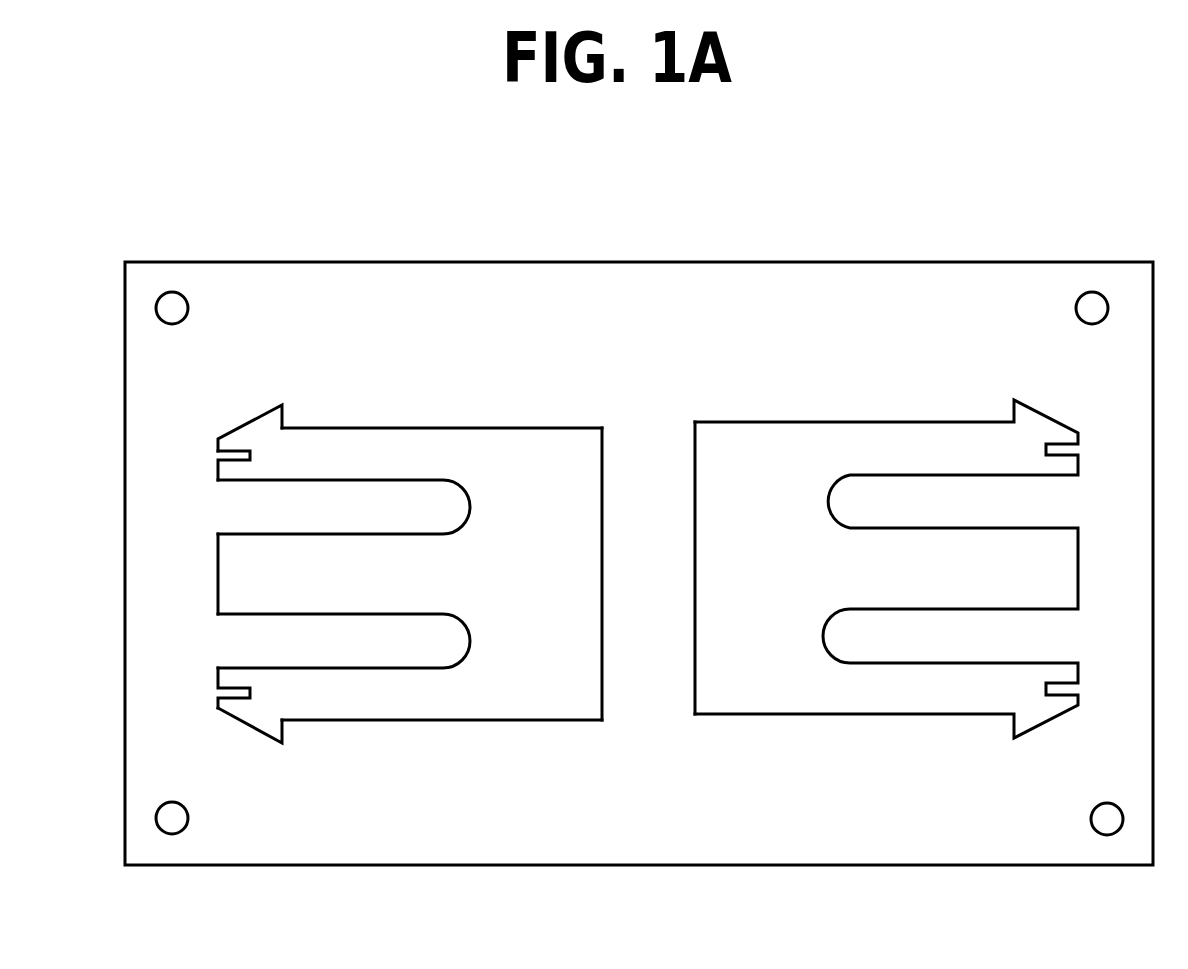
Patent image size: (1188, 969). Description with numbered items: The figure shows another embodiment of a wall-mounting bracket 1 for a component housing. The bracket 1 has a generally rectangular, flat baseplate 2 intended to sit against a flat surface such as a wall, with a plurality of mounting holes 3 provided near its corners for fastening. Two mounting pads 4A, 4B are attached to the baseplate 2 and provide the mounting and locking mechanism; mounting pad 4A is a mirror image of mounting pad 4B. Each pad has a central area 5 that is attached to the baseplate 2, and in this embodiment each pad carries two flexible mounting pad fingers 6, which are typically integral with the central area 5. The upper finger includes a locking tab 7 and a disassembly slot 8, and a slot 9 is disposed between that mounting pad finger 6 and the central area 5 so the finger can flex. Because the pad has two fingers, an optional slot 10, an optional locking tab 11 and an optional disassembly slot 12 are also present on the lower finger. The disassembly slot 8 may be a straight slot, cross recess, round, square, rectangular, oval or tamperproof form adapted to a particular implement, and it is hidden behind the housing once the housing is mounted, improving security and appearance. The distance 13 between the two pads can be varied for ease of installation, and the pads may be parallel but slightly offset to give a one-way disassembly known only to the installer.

The bracket 1 is at (435, 200).
The baseplate 2 is at (325, 260).
The mounting holes 3 is at (167, 292).
The mounting pad 4A is at (520, 720).
The mounting pad 4B is at (768, 714).
The central area 5 is at (500, 563).
The mounting pad fingers 6 is at (393, 428).
The locking tab 7 is at (283, 409).
The disassembly slot 8 is at (215, 453).
The slot 9 is at (465, 492).
The optional slot 10 is at (247, 640).
The optional locking tab 11 is at (240, 725).
The optional disassembly slot 12 is at (217, 693).
The distance between the pads 13 is at (647, 452).